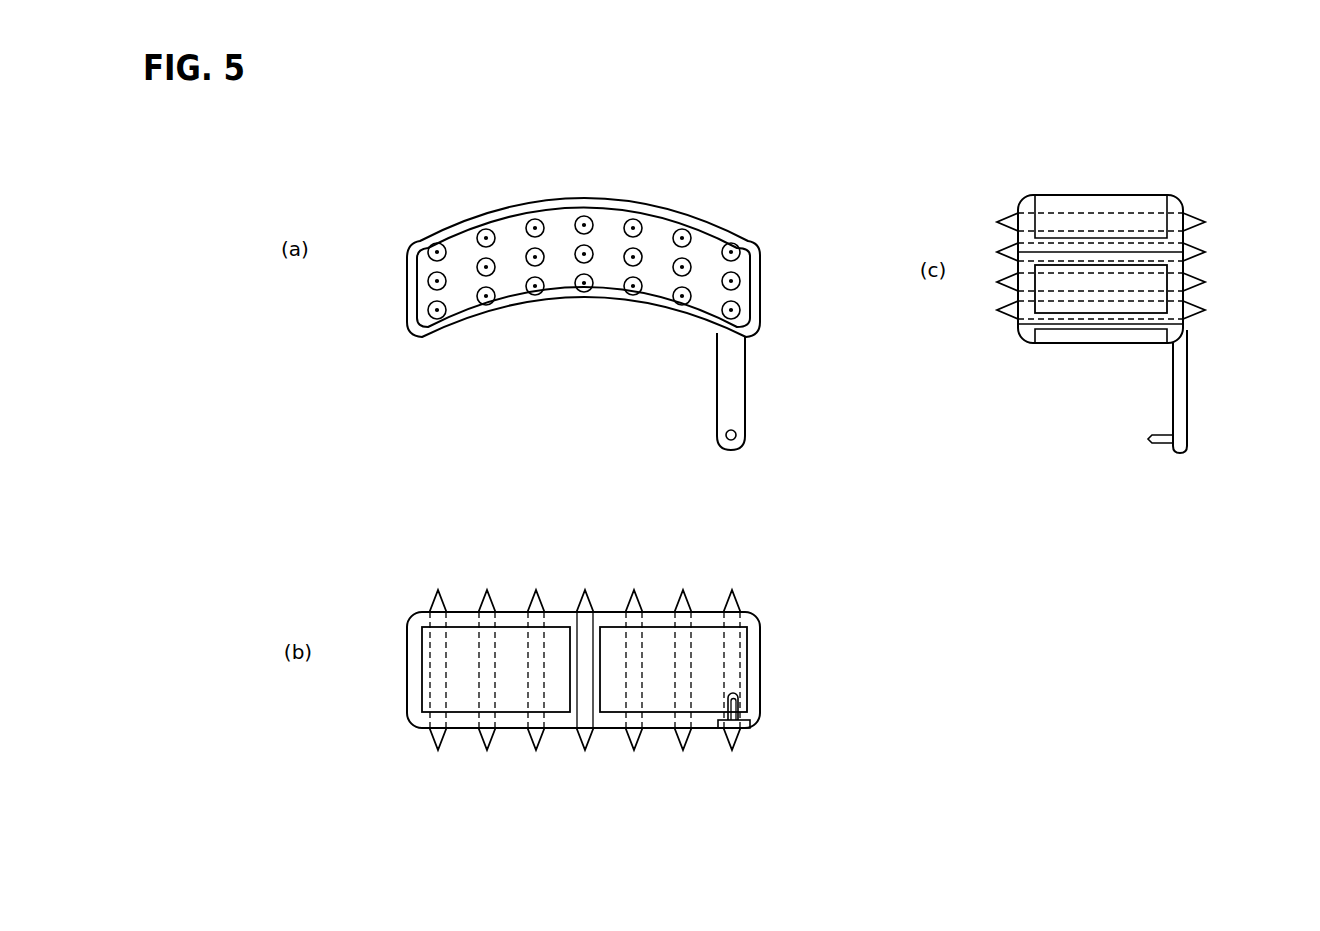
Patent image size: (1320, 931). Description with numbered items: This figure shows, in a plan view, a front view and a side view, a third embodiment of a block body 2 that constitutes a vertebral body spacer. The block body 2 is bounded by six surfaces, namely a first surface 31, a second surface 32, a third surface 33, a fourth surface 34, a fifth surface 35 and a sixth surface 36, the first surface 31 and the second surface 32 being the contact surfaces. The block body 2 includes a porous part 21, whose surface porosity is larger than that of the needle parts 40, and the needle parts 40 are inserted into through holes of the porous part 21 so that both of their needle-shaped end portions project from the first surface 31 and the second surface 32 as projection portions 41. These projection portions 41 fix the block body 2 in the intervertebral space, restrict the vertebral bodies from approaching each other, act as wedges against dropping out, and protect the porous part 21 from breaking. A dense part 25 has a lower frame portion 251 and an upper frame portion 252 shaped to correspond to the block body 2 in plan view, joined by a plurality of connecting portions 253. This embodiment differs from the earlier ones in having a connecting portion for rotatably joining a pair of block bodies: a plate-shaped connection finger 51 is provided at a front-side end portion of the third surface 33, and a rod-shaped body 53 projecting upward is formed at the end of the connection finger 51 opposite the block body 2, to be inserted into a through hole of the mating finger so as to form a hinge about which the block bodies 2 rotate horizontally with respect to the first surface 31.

The block body 2 is at (645, 179).
The porous part 21 is at (745, 298).
The dense part 25 is at (520, 210).
The lower frame portion 251 is at (752, 715).
The upper frame portion 252 is at (750, 617).
The connecting portions 253 is at (755, 670).
The first surface 31 is at (603, 268).
The second surface 32 is at (556, 730).
The third surface 33 is at (545, 310).
The fourth surface 34 is at (690, 212).
The fifth surface 35 is at (407, 285).
The sixth surface 36 is at (768, 268).
The needle parts 40 is at (687, 690).
The projection portions 41 is at (682, 298).
The connection finger 51 is at (728, 383).
The rod-shaped body 53 is at (728, 445).